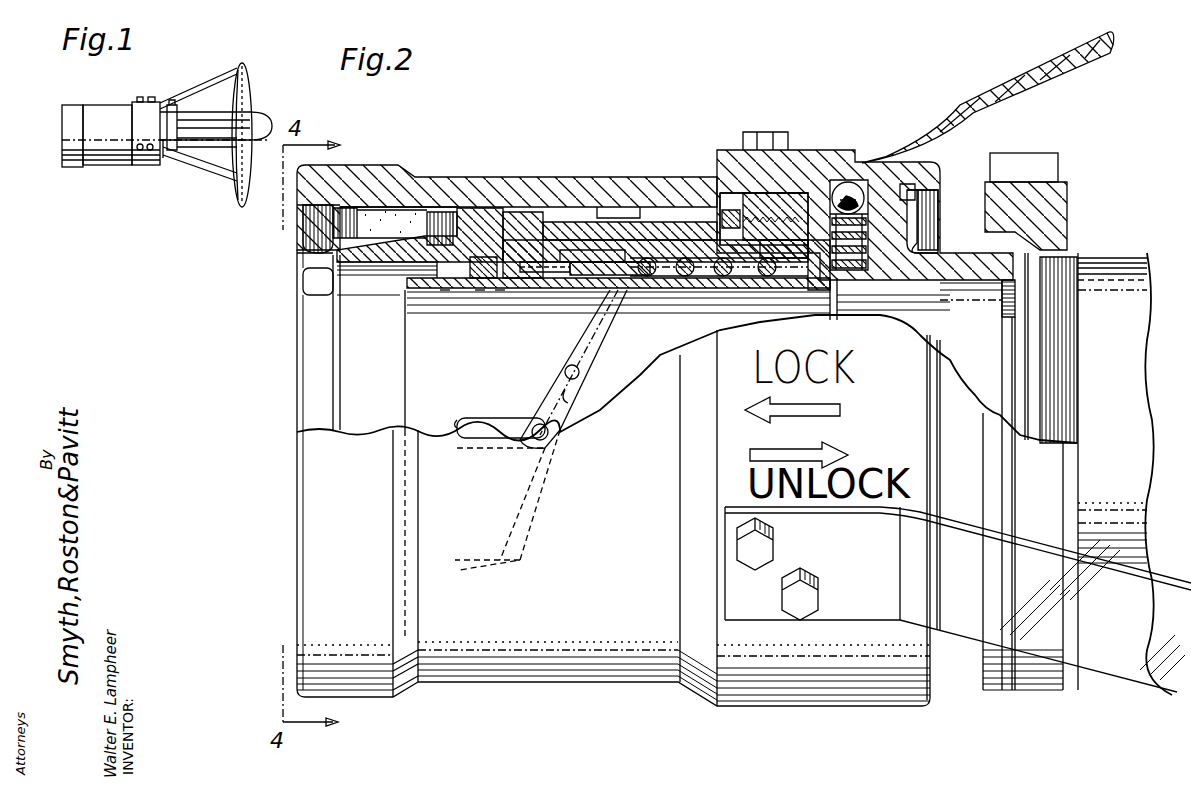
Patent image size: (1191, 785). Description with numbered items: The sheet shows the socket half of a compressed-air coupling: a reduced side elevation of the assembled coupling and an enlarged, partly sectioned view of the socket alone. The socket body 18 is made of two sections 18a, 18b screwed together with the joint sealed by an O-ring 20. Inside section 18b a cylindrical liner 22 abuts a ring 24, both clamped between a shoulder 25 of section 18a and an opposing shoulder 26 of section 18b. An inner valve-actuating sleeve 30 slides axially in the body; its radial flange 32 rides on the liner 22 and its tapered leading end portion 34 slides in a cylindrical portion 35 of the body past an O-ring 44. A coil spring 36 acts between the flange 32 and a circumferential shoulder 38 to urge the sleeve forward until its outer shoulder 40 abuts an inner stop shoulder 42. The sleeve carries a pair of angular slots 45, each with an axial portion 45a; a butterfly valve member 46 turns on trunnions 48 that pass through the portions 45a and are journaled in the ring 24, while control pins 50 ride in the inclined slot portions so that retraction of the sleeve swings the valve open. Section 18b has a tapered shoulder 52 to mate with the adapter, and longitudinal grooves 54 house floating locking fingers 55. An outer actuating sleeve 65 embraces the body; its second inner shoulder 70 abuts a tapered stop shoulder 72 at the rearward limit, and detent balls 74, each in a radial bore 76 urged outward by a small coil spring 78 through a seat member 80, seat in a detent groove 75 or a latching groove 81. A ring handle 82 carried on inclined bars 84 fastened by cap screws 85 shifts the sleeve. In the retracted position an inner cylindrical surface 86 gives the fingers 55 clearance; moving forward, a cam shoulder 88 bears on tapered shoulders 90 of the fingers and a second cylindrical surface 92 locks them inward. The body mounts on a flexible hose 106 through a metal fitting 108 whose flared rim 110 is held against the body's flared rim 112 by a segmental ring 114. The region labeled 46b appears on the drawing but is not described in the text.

In FIG. 1, the socket body 18 is at (168, 158).
In FIG. 2, the socket body 18 is at (957, 244).
In FIG. 2, the body section 18a is at (800, 195).
In FIG. 2, the body section 18b is at (545, 225).
In FIG. 2, the O-ring 20 is at (748, 200).
In FIG. 2, the cylindrical liner 22 is at (700, 272).
In FIG. 2, the ring 24 is at (556, 296).
In FIG. 2, the shoulder 25 is at (765, 276).
In FIG. 2, the shoulder 26 is at (570, 240).
In FIG. 2, the valve-actuating sleeve 30 is at (396, 370).
In FIG. 2, the radial flange 32 is at (583, 296).
In FIG. 2, the leading end portion 34 is at (419, 292).
In FIG. 2, the cylindrical portion 35 is at (483, 262).
In FIG. 2, the coil spring 36 is at (683, 292).
In FIG. 2, the circumferential shoulder 38 is at (828, 292).
In FIG. 2, the outer circumferential shoulder 40 is at (502, 294).
In FIG. 2, the inner circumferential stop shoulder 42 is at (520, 268).
In FIG. 2, the O-ring 44 is at (480, 292).
In FIG. 2, the slots 45 is at (495, 407).
In FIG. 2, the slot portion 45a is at (463, 426).
In FIG. 2, the butterfly valve member 46 is at (615, 328).
In FIG. 2, the link end 46b is at (572, 400).
In FIG. 2, the trunnions 48 is at (535, 426).
In FIG. 2, the control pins 50 is at (580, 373).
In FIG. 2, the inner circumferential tapered shoulder 52 is at (445, 292).
In FIG. 2, the longitudinal grooves 54 is at (350, 240).
In FIG. 2, the locking fingers 55 is at (412, 222).
In FIG. 1, the outer actuating sleeve 65 is at (108, 106).
In FIG. 2, the outer actuating sleeve 65 is at (581, 692).
In FIG. 2, the second inner shoulder 70 is at (725, 200).
In FIG. 2, the inner tapered stop shoulder 72 is at (760, 220).
In FIG. 2, the detent balls 74 is at (855, 205).
In FIG. 2, the detent groove 75 is at (925, 198).
In FIG. 2, the radial bore 76 is at (866, 250).
In FIG. 2, the coil spring 78 is at (866, 235).
In FIG. 2, the seat member 80 is at (866, 218).
In FIG. 2, the latching groove 81 is at (850, 195).
In FIG. 1, the ring handle 82 is at (254, 92).
In FIG. 1, the inclined bars 84 is at (205, 80).
In FIG. 2, the inclined bars 84 is at (985, 102).
In FIG. 1, the cap screws 85 is at (153, 97).
In FIG. 2, the cap screws 85 is at (762, 130).
In FIG. 2, the inner cylindrical surface 86 is at (320, 207).
In FIG. 2, the cam shoulder 88 is at (378, 218).
In FIG. 2, the tapered shoulders 90 is at (345, 206).
In FIG. 2, the second inner cylindrical surface 92 is at (415, 205).
In FIG. 1, the flexible hose 106 is at (255, 116).
In FIG. 2, the metal fitting 108 is at (1100, 262).
In FIG. 2, the flared rim 110 is at (1040, 232).
In FIG. 2, the flared rim 112 is at (988, 185).
In FIG. 2, the segmental ring 114 is at (1078, 181).